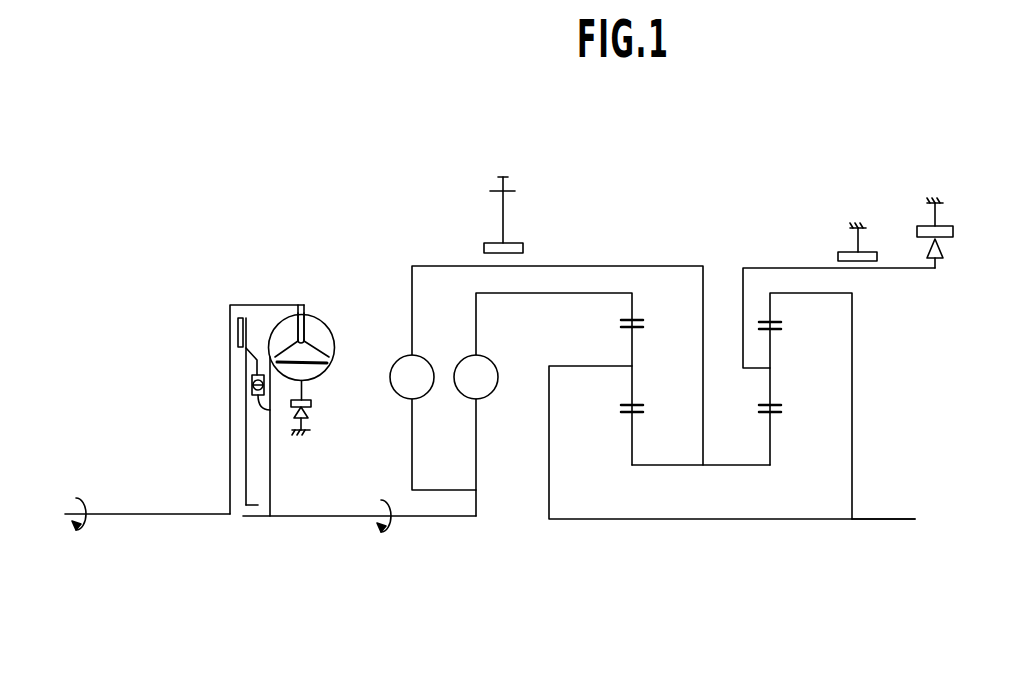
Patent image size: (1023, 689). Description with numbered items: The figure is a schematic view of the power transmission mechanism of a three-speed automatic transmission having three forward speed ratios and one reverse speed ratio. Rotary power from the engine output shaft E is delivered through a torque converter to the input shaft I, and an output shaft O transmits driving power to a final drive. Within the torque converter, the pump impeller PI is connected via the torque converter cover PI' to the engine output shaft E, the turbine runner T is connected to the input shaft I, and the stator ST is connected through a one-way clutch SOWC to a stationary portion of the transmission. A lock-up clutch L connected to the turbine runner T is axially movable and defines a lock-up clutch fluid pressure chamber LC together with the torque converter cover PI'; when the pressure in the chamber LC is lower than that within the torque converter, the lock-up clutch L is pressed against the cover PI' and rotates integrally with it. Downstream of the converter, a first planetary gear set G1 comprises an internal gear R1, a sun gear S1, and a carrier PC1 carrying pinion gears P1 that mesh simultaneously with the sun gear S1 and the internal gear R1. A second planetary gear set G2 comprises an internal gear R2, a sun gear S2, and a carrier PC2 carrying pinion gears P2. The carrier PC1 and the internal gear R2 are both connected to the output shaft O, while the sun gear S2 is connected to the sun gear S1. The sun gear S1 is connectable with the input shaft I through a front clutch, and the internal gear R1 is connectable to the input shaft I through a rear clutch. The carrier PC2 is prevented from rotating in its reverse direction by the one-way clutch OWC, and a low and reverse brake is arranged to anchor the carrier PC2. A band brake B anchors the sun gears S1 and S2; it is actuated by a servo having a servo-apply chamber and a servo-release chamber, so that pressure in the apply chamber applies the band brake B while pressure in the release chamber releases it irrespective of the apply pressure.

The engine output shaft E is at (166, 514).
The input shaft I is at (304, 518).
The output shaft O is at (877, 519).
The turbine runner T is at (287, 313).
The pump impeller PI is at (342, 341).
The torque converter cover PI' is at (240, 409).
The stator ST is at (327, 364).
The lock-up clutch fluid pressure chamber LC is at (237, 357).
The lock-up clutch L is at (247, 455).
The one-way clutch SOWC is at (312, 406).
The band brake B is at (510, 242).
The first planetary gear set G1 is at (612, 268).
The internal gear R1 is at (632, 306).
The pinion gears P1 is at (632, 383).
The carrier PC1 is at (591, 366).
The sun gear S1 is at (632, 452).
The second planetary gear set G2 is at (762, 300).
The internal gear R2 is at (772, 308).
The pinion gears P2 is at (770, 383).
The carrier PC2 is at (772, 366).
The sun gear S2 is at (770, 452).
The one-way clutch OWC is at (950, 237).